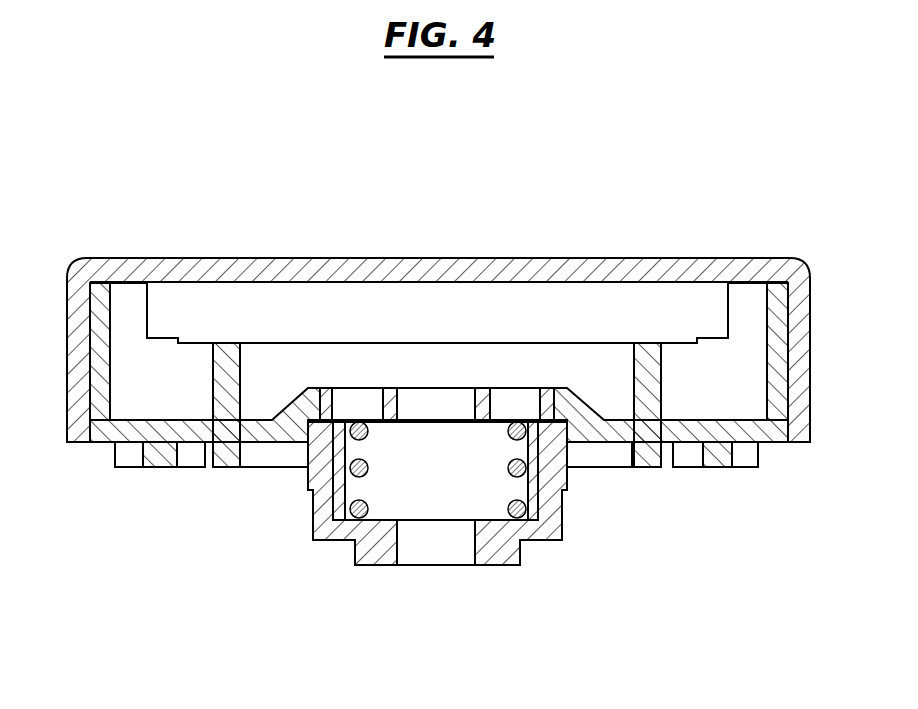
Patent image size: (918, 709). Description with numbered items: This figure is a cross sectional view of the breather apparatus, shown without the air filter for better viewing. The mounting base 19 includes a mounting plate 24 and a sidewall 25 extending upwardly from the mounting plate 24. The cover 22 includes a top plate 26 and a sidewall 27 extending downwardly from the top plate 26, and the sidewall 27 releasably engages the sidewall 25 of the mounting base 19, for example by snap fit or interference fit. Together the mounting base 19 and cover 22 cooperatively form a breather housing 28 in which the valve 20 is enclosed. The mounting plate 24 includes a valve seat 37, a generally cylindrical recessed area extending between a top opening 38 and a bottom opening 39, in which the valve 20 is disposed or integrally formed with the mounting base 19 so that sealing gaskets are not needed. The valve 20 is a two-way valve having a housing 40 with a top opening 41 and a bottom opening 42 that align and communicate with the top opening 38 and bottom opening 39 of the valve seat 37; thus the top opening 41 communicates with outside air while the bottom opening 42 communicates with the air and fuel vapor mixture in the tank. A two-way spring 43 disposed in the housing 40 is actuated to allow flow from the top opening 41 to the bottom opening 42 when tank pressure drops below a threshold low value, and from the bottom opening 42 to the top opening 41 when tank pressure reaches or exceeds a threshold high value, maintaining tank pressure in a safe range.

The mounting base 19 is at (647, 433).
The valve 20 is at (535, 508).
The cover 22 is at (653, 258).
The mounting plate 24 is at (263, 428).
The sidewall 25 is at (98, 400).
The top plate 26 is at (342, 258).
The sidewall 27 is at (811, 382).
The breather housing 28 is at (488, 313).
The valve seat 37 is at (308, 487).
The top opening 38 is at (410, 388).
The bottom opening 39 is at (415, 565).
The housing 40 is at (465, 482).
The top opening 41 is at (433, 413).
The bottom opening 42 is at (398, 565).
The two-way spring 43 is at (560, 477).